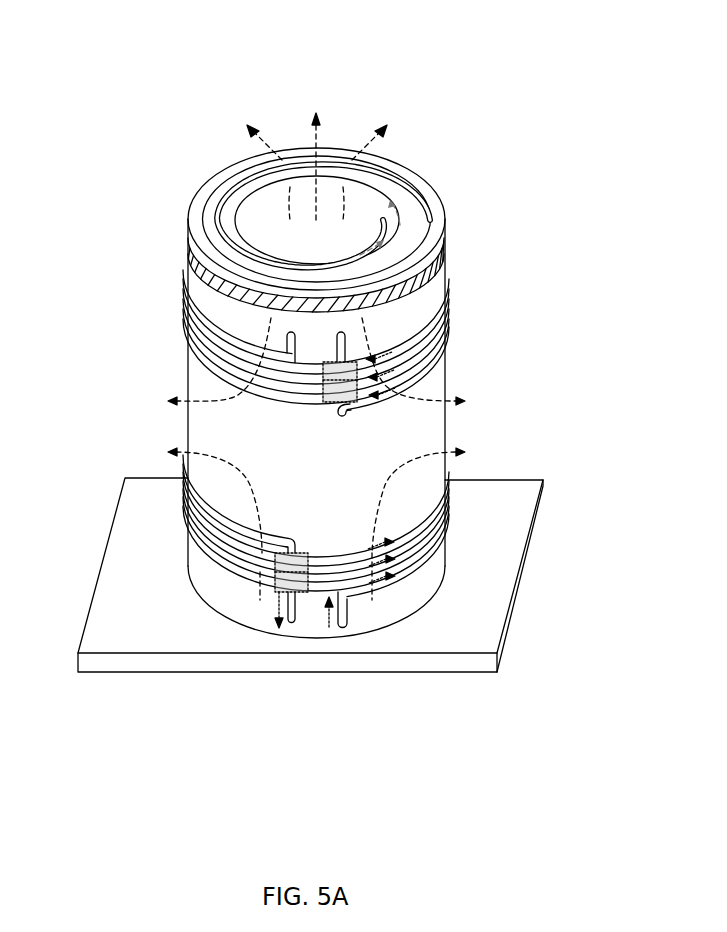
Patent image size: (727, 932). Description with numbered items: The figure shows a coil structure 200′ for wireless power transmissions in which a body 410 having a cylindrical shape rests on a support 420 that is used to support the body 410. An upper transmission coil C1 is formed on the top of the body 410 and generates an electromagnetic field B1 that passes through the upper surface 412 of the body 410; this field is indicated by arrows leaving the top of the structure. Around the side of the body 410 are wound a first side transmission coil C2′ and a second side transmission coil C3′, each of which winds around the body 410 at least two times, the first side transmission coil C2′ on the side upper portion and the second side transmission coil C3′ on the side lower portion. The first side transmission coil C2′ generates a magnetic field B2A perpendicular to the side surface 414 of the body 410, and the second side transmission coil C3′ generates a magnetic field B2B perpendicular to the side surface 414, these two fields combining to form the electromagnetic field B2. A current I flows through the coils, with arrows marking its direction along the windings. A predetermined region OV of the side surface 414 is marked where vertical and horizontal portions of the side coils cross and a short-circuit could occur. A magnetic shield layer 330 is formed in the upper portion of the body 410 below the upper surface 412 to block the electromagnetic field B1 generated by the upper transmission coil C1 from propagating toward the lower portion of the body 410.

The coil structure for wireless power transmissions 200′ is at (343, 38).
The upper surface 412 is at (201, 203).
The body 410 is at (183, 367).
The side surface 414 is at (187, 387).
The magnetic shield layer 330 is at (433, 274).
The support 420 is at (503, 578).
The upper transmission coil C1 is at (433, 170).
The first side transmission coil C2′ is at (415, 352).
The second side transmission coil C3′ is at (410, 577).
The predetermined region OV is at (358, 362).
The current I is at (378, 396).
The electromagnetic field B1 is at (317, 151).
The electromagnetic field B2 is at (322, 459).
The magnetic field B2A is at (321, 369).
The magnetic field B2B is at (321, 519).